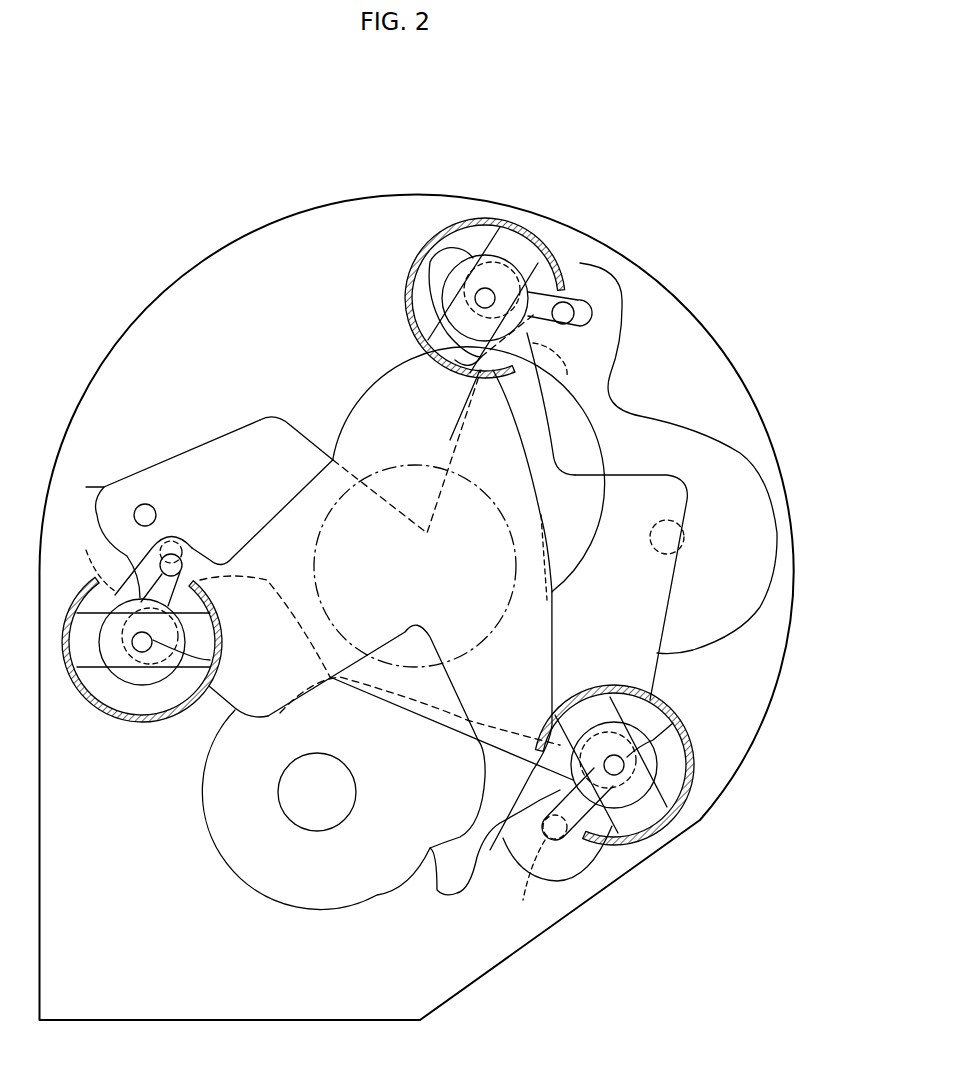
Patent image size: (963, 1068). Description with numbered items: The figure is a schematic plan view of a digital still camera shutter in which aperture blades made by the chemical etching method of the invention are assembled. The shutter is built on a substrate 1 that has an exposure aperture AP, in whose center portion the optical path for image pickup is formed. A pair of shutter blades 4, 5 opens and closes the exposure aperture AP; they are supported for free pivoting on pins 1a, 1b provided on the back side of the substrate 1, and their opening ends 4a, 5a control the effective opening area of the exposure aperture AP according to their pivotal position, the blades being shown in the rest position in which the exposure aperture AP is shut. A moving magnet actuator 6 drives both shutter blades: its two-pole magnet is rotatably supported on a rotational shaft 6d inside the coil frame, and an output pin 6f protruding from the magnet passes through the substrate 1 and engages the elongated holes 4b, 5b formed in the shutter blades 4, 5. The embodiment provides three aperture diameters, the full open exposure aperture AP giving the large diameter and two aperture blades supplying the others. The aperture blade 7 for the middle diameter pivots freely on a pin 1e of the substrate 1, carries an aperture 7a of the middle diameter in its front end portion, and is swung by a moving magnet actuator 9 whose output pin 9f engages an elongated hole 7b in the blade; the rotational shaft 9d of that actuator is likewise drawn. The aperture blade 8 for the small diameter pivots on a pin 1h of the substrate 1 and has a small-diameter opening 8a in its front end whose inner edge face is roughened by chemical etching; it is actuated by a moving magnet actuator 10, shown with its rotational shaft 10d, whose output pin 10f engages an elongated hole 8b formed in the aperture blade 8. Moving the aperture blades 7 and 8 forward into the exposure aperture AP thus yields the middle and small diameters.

The substrate 1 is at (357, 195).
The pin 1a is at (91, 557).
The pin 1b is at (148, 504).
The pin 1e is at (660, 830).
The pin 1h is at (558, 372).
The shutter blade 4 is at (355, 441).
The opening end 4a is at (378, 642).
The elongated hole 4b is at (190, 546).
The shutter blade 5 is at (236, 425).
The opening end 5a is at (435, 437).
The elongated hole 5b is at (318, 580).
The moving magnet actuator 6 is at (126, 748).
The rotational shaft 6d is at (210, 660).
The output pin 6f is at (82, 490).
The aperture blade 7 is at (305, 912).
The aperture 7a is at (317, 832).
The elongated hole 7b is at (545, 840).
The aperture blade 8 is at (690, 420).
The opening 8a is at (662, 555).
The elongated hole 8b is at (620, 280).
The moving magnet actuator 9 is at (616, 860).
The drive gear 9d is at (673, 723).
The output pin 9f is at (523, 900).
The moving magnet actuator 10 is at (385, 306).
The drive gear 10d is at (462, 362).
The output pin 10f is at (600, 330).
The exposure aperture AP is at (318, 580).